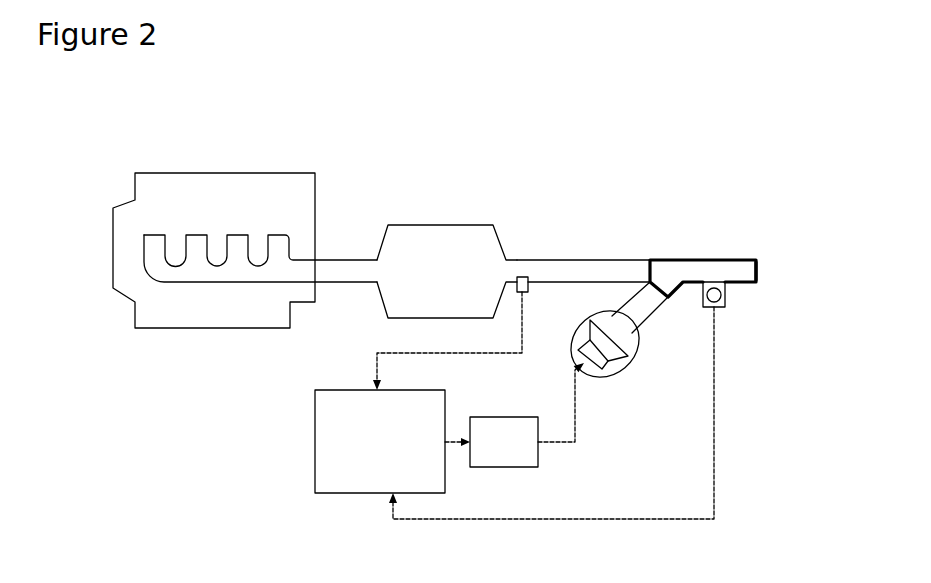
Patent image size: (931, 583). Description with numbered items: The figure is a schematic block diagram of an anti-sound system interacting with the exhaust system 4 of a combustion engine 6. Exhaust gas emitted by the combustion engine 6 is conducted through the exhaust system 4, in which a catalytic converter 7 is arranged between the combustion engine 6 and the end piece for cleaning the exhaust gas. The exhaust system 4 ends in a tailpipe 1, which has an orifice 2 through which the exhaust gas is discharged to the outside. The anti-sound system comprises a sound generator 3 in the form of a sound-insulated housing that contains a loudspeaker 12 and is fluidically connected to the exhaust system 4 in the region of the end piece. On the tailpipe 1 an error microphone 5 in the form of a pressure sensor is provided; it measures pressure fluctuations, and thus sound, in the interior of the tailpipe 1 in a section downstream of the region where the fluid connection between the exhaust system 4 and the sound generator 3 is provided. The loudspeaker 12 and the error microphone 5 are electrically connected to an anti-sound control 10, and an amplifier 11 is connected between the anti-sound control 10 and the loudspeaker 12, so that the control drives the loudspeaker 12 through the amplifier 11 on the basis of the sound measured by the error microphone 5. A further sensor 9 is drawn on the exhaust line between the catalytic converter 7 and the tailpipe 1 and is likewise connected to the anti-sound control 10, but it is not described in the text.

The tailpipe 1 is at (692, 258).
The orifice 2 is at (757, 271).
The sound generator 3 is at (632, 368).
The exhaust system 4 is at (600, 258).
The error microphone 5 is at (722, 302).
The combustion engine 6 is at (280, 198).
The catalytic converter 7 is at (445, 238).
The exhaust gas sensor 9 is at (523, 277).
The anti-sound control 10 is at (382, 475).
The amplifier 11 is at (530, 462).
The loudspeaker 12 is at (600, 360).